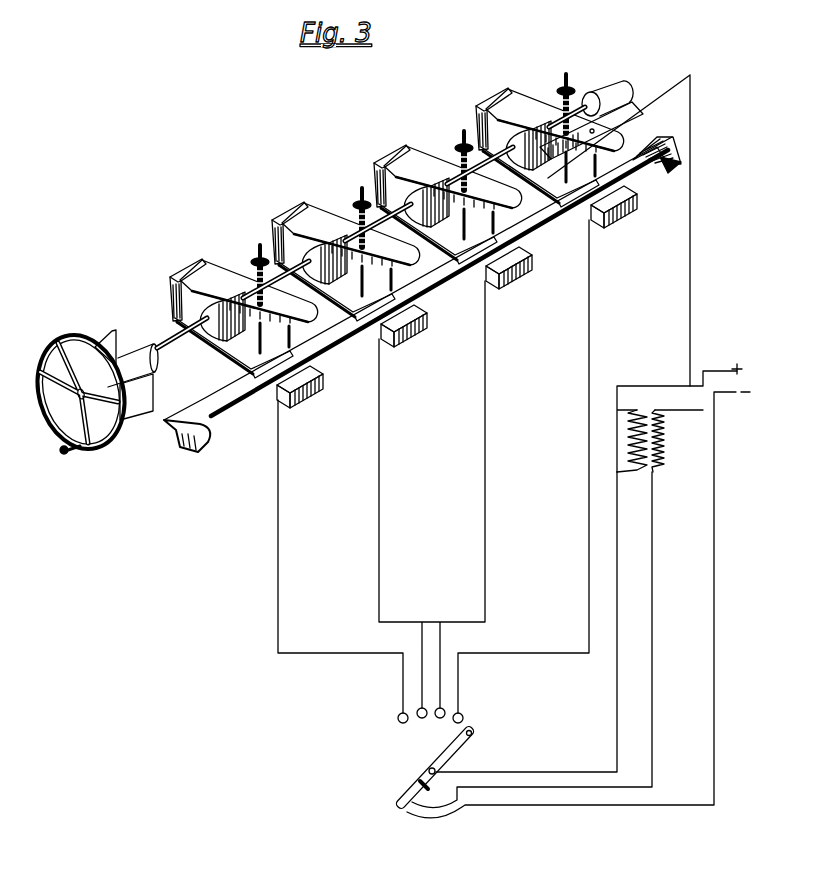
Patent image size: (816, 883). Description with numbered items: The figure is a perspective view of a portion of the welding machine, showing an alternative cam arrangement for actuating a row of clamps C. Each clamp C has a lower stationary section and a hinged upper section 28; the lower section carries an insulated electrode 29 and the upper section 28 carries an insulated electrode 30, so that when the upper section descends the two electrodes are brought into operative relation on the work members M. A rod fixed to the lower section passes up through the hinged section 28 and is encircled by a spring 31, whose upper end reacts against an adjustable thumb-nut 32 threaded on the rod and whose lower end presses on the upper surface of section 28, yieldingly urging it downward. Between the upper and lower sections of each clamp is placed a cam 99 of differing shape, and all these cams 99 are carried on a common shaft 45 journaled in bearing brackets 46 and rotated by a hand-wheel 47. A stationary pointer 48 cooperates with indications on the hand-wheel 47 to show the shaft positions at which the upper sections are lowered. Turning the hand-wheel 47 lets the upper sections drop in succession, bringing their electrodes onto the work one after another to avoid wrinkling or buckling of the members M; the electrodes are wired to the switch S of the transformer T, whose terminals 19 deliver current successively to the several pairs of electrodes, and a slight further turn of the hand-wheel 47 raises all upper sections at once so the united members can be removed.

The terminal contacts 19 is at (439, 719).
The upper section 28 is at (214, 272).
The electrode 29 is at (316, 394).
The electrode 30 is at (292, 334).
The spring 31 is at (230, 362).
The adjustable thumb-nut 32 is at (253, 262).
The common shaft 45 is at (173, 337).
The bearing brackets 46 is at (140, 408).
The hand-wheel 47 is at (100, 453).
The stationary pointer 48 is at (100, 340).
The cam roller 99 is at (218, 330).
The clamps C is at (341, 193).
The members M is at (668, 165).
The switch S is at (563, 605).
The transformer T is at (679, 418).